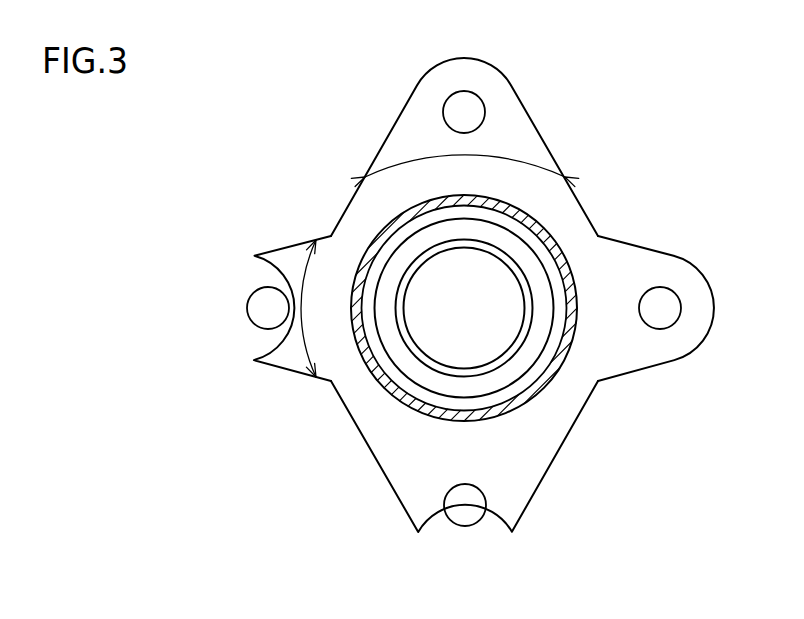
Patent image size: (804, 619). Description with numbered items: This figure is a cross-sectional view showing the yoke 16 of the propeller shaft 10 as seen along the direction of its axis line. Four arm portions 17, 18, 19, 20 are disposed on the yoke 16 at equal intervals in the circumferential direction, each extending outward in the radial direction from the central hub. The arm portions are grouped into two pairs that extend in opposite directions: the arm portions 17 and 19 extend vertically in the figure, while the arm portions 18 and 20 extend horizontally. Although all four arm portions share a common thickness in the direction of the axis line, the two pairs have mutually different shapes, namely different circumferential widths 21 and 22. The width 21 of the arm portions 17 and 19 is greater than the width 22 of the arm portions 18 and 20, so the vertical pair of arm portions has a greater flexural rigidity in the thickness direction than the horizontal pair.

The yoke 16 is at (481, 271).
The propeller shaft 10 is at (464, 308).
The arm portion 17 is at (412, 100).
The arm portion 18 is at (253, 353).
The arm portion 19 is at (513, 507).
The arm portion 20 is at (672, 267).
The width 21 is at (495, 156).
The width 22 is at (302, 280).